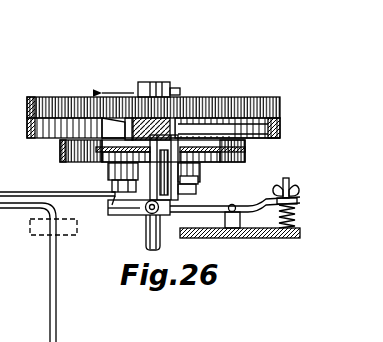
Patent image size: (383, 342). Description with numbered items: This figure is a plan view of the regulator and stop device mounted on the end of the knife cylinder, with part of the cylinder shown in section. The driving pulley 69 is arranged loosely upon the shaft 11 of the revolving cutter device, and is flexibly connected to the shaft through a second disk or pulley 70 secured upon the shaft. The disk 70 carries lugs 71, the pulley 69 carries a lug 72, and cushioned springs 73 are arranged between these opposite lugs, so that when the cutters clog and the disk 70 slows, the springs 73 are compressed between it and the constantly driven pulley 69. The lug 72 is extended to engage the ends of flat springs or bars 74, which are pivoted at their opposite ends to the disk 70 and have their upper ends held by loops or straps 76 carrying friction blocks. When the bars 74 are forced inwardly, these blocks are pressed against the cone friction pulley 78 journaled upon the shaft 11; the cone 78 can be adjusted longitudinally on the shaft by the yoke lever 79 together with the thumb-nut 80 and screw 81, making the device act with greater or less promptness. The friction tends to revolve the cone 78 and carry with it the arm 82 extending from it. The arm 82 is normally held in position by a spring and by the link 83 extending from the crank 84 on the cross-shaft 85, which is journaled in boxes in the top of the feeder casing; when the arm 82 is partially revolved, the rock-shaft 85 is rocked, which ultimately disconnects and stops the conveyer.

The shaft 11 is at (150, 235).
The driving pulley 69 is at (258, 105).
The second disk or pulley 70 is at (247, 156).
The lugs 71 is at (128, 133).
The lug 72 is at (187, 133).
The cushioned springs 73 is at (149, 117).
The flat springs or bars 74 is at (110, 176).
The loops or straps 76 is at (180, 193).
The cone friction pulley 78 is at (124, 189).
The yoke lever 79 is at (236, 207).
The thumb-nut 80 is at (299, 192).
The screw 81 is at (296, 218).
The arm 82 is at (120, 215).
The link 83 is at (62, 192).
The crank 84 is at (24, 207).
The cross-shaft 85 is at (51, 281).